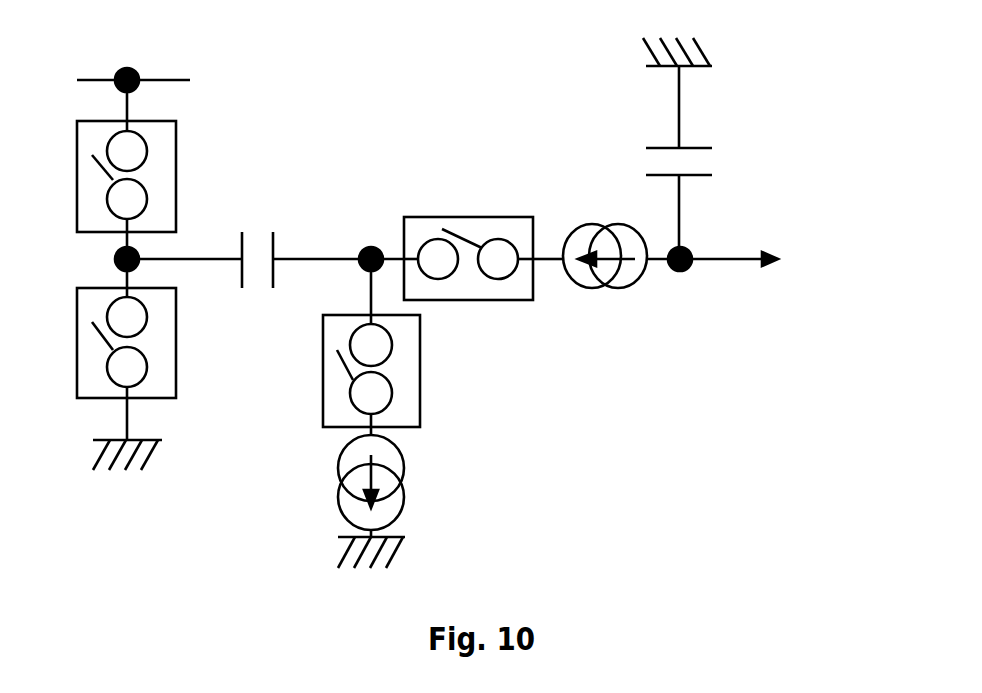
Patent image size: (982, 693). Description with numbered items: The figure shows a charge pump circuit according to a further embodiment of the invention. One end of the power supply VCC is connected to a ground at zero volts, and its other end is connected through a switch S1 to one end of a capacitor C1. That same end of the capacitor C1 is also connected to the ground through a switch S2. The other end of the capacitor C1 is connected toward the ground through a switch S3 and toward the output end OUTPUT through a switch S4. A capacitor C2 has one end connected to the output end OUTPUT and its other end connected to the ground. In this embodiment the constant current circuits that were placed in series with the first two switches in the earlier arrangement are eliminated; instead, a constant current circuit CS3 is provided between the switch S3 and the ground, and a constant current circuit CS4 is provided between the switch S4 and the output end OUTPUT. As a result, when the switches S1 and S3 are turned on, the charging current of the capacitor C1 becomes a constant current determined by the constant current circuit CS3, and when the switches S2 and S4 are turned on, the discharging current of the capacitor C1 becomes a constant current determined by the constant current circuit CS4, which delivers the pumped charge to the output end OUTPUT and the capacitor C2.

The power supply VCC is at (162, 81).
The switch S1 is at (145, 176).
The switch S2 is at (150, 343).
The switch S3 is at (392, 371).
The switch S4 is at (468, 242).
The capacitor C1 is at (256, 246).
The capacitor C2 is at (696, 162).
The constant current circuit CS3 is at (401, 482).
The constant current circuit CS4 is at (605, 241).
The output end OUTPUT is at (818, 260).